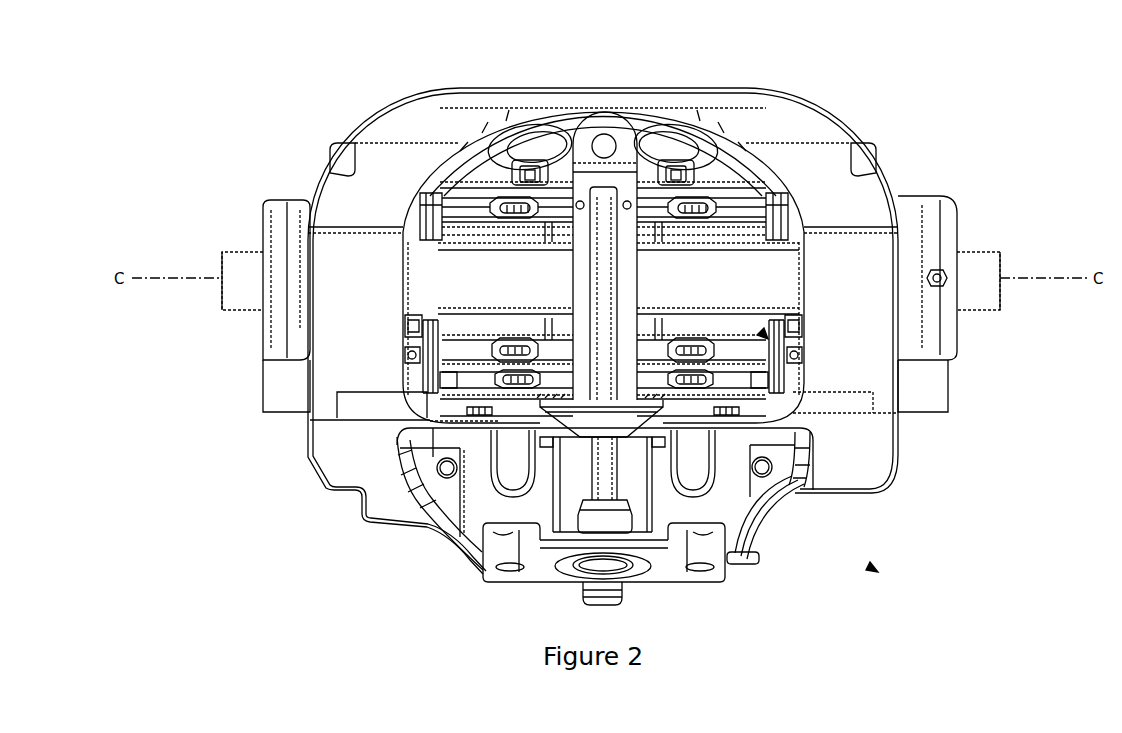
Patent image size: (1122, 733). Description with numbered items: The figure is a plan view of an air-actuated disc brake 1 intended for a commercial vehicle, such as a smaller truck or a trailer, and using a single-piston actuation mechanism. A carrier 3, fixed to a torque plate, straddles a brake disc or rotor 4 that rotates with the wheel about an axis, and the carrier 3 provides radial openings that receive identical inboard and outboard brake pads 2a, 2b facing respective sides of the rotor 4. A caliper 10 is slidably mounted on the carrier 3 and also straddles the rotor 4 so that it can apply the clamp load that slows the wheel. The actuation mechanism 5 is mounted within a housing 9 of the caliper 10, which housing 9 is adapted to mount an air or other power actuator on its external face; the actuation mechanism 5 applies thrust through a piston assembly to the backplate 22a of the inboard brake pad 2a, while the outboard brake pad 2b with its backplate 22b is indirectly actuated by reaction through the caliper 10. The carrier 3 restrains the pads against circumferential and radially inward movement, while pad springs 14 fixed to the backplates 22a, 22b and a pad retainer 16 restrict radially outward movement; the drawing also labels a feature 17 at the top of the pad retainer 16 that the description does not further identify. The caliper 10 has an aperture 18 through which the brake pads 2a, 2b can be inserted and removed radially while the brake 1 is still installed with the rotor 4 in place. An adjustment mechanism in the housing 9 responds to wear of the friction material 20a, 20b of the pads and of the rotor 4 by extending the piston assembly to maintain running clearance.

The disc brake 1 is at (873, 566).
The inboard brake pad 2a is at (795, 348).
The outboard brake pad 2b is at (759, 216).
The carrier 3 is at (952, 337).
The brake disc or rotor 4 is at (237, 257).
The actuation mechanism 5 is at (706, 548).
The housing 9 is at (733, 492).
The caliper 10 is at (882, 191).
The pad springs 14 is at (733, 208).
The pad retainer 16 is at (588, 142).
The bore 17 is at (612, 152).
The aperture 18 is at (803, 258).
The friction material 20a is at (455, 325).
The friction material 20b is at (453, 233).
The backplate 22a is at (412, 358).
The backplate 22b is at (422, 193).